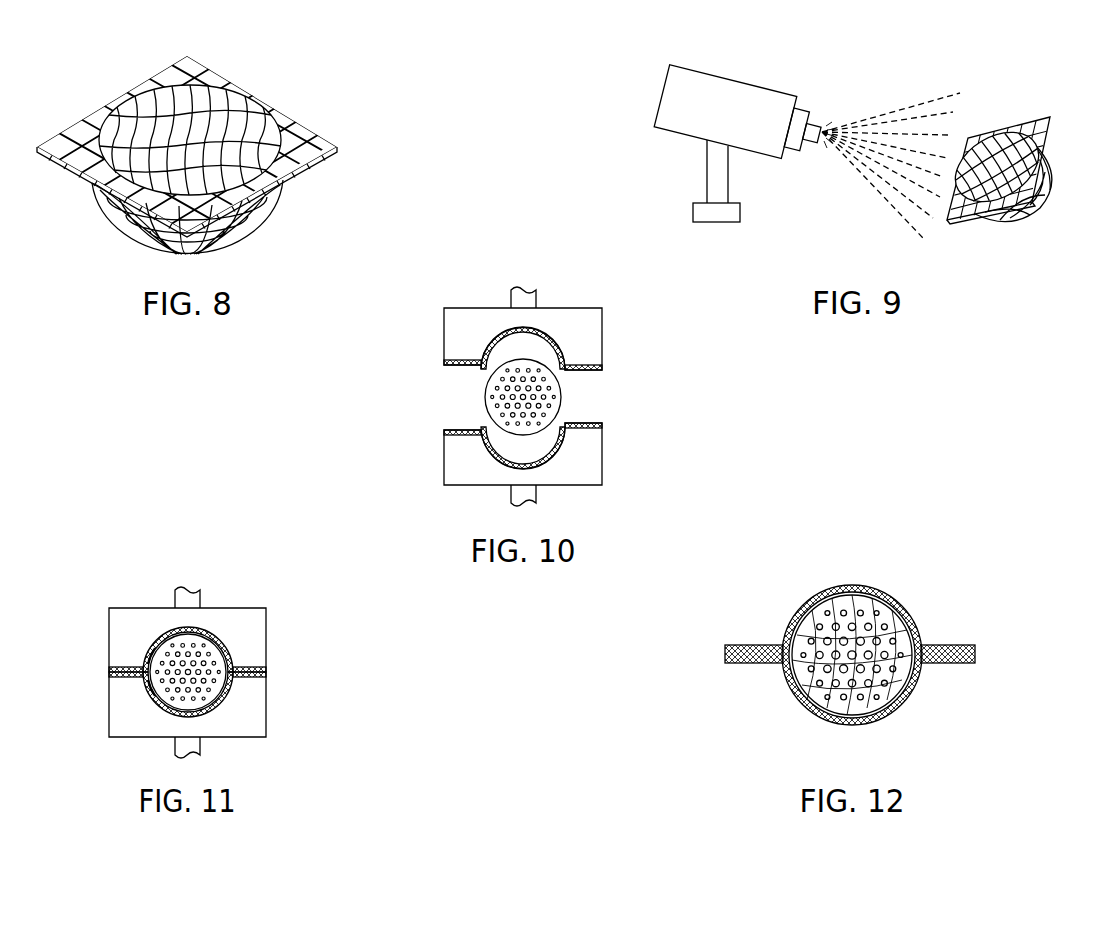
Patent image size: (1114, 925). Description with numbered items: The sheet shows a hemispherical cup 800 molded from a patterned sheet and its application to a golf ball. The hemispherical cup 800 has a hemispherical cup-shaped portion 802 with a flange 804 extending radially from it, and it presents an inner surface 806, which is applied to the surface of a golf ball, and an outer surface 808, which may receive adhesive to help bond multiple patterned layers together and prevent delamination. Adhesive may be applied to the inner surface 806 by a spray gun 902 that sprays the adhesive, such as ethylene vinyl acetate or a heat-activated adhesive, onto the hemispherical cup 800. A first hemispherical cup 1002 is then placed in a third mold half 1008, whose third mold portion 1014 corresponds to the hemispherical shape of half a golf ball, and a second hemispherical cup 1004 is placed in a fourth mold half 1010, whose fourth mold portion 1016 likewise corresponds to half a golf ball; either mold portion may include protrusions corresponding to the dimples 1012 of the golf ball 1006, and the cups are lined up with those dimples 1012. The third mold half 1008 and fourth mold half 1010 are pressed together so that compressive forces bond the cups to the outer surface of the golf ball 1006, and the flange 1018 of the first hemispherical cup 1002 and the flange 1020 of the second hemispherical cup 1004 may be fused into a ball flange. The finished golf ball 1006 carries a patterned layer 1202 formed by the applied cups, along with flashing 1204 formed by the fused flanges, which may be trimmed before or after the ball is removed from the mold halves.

In FIG. 8, the hemispherical cup 800 is at (210, 171).
In FIG. 9, the hemispherical cup 800 is at (1008, 162).
In FIG. 8, the hemispherical cup-shaped portion 802 is at (123, 227).
In FIG. 9, the hemispherical cup-shaped portion 802 is at (1012, 222).
In FIG. 8, the flange 804 is at (303, 137).
In FIG. 9, the flange 804 is at (960, 220).
In FIG. 8, the inner surface 806 is at (135, 130).
In FIG. 9, the inner surface 806 is at (985, 155).
In FIG. 8, the outer surface 808 is at (252, 223).
In FIG. 9, the outer surface 808 is at (1047, 193).
In FIG. 9, the spray gun 902 is at (762, 98).
In FIG. 10, the first hemispherical cup 1002 is at (460, 343).
In FIG. 11, the first hemispherical cup 1002 is at (147, 662).
In FIG. 10, the second hemispherical cup 1004 is at (478, 438).
In FIG. 11, the second hemispherical cup 1004 is at (147, 683).
In FIG. 10, the golf ball 1006 is at (516, 397).
In FIG. 11, the golf ball 1006 is at (150, 700).
In FIG. 12, the golf ball 1006 is at (813, 625).
In FIG. 10, the third mold half 1008 is at (567, 315).
In FIG. 11, the third mold half 1008 is at (248, 617).
In FIG. 10, the fourth mold half 1010 is at (595, 475).
In FIG. 11, the fourth mold half 1010 is at (263, 730).
In FIG. 10, the dimples 1012 is at (551, 403).
In FIG. 11, the dimples 1012 is at (210, 693).
In FIG. 10, the third mold portion 1014 is at (490, 350).
In FIG. 11, the third mold portion 1014 is at (167, 630).
In FIG. 10, the fourth mold portion 1016 is at (492, 447).
In FIG. 11, the fourth mold portion 1016 is at (155, 707).
In FIG. 10, the flange 1018 is at (592, 364).
In FIG. 11, the flange 1018 is at (260, 668).
In FIG. 10, the flange 1020 is at (592, 430).
In FIG. 11, the flange 1020 is at (258, 676).
In FIG. 12, the patterned layer 1202 is at (803, 607).
In FIG. 12, the flashing 1204 is at (725, 648).